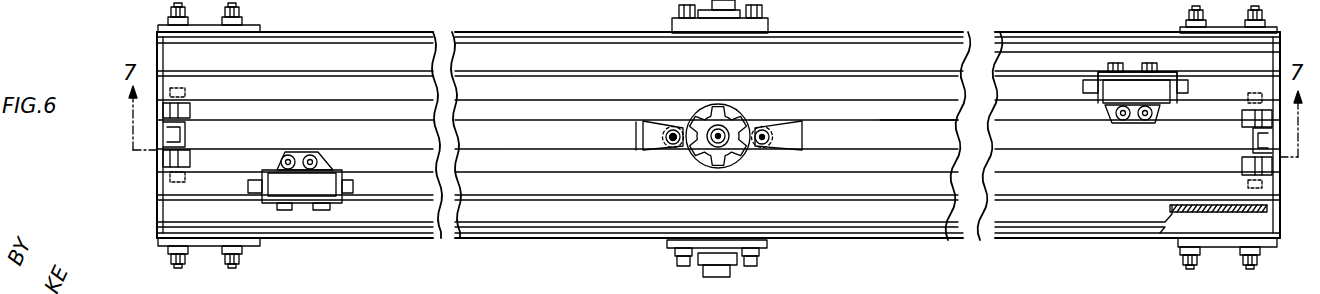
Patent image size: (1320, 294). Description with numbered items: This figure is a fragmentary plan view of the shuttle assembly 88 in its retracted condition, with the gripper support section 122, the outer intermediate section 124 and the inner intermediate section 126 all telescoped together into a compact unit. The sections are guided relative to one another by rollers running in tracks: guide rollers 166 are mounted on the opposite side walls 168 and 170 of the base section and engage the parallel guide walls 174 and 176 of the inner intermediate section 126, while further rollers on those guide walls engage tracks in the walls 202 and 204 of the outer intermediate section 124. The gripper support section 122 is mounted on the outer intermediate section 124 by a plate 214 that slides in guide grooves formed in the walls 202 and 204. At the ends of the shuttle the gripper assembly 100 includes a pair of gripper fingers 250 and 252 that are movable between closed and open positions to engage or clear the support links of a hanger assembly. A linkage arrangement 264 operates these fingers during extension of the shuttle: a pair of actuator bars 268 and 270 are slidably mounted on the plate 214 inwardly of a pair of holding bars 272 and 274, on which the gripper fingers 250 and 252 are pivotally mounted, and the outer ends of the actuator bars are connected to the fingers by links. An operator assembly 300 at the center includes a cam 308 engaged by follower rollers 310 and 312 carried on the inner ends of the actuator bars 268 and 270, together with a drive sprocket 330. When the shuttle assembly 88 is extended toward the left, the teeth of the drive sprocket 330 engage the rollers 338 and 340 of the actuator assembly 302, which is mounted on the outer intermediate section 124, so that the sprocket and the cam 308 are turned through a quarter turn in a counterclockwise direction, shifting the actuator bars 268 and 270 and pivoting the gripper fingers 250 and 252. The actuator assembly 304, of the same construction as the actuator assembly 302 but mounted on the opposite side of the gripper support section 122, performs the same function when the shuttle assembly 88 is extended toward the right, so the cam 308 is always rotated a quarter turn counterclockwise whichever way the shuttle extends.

The shuttle assembly 88 is at (349, 245).
The gripper assembly 100 is at (155, 135).
The gripper support section 122 is at (538, 163).
The outer intermediate section 124 is at (468, 100).
The inner intermediate section 126 is at (172, 52).
The guide rollers 166 is at (1252, 220).
The side wall 168 is at (980, 24).
The side wall 170 is at (1027, 233).
The guide wall 174 is at (868, 58).
The guide wall 176 is at (787, 213).
The wall 202 is at (1010, 92).
The wall 204 is at (885, 183).
The plate 214 is at (1010, 118).
The gripper finger 250 is at (172, 146).
The gripper finger 252 is at (1246, 138).
The linkage arrangement 264 is at (525, 110).
The actuator bar 268 is at (655, 95).
The actuator bar 270 is at (798, 140).
The holding bar 272 is at (572, 133).
The holding bar 274 is at (925, 130).
The operator assembly 300 is at (699, 167).
The actuator assembly 302 is at (338, 154).
The actuator assembly 304 is at (1130, 62).
The cam 308 is at (750, 160).
The follower roller 310 is at (673, 125).
The follower roller 312 is at (768, 127).
The drive sprocket 330 is at (718, 112).
The roller 338 is at (288, 155).
The roller 340 is at (318, 142).